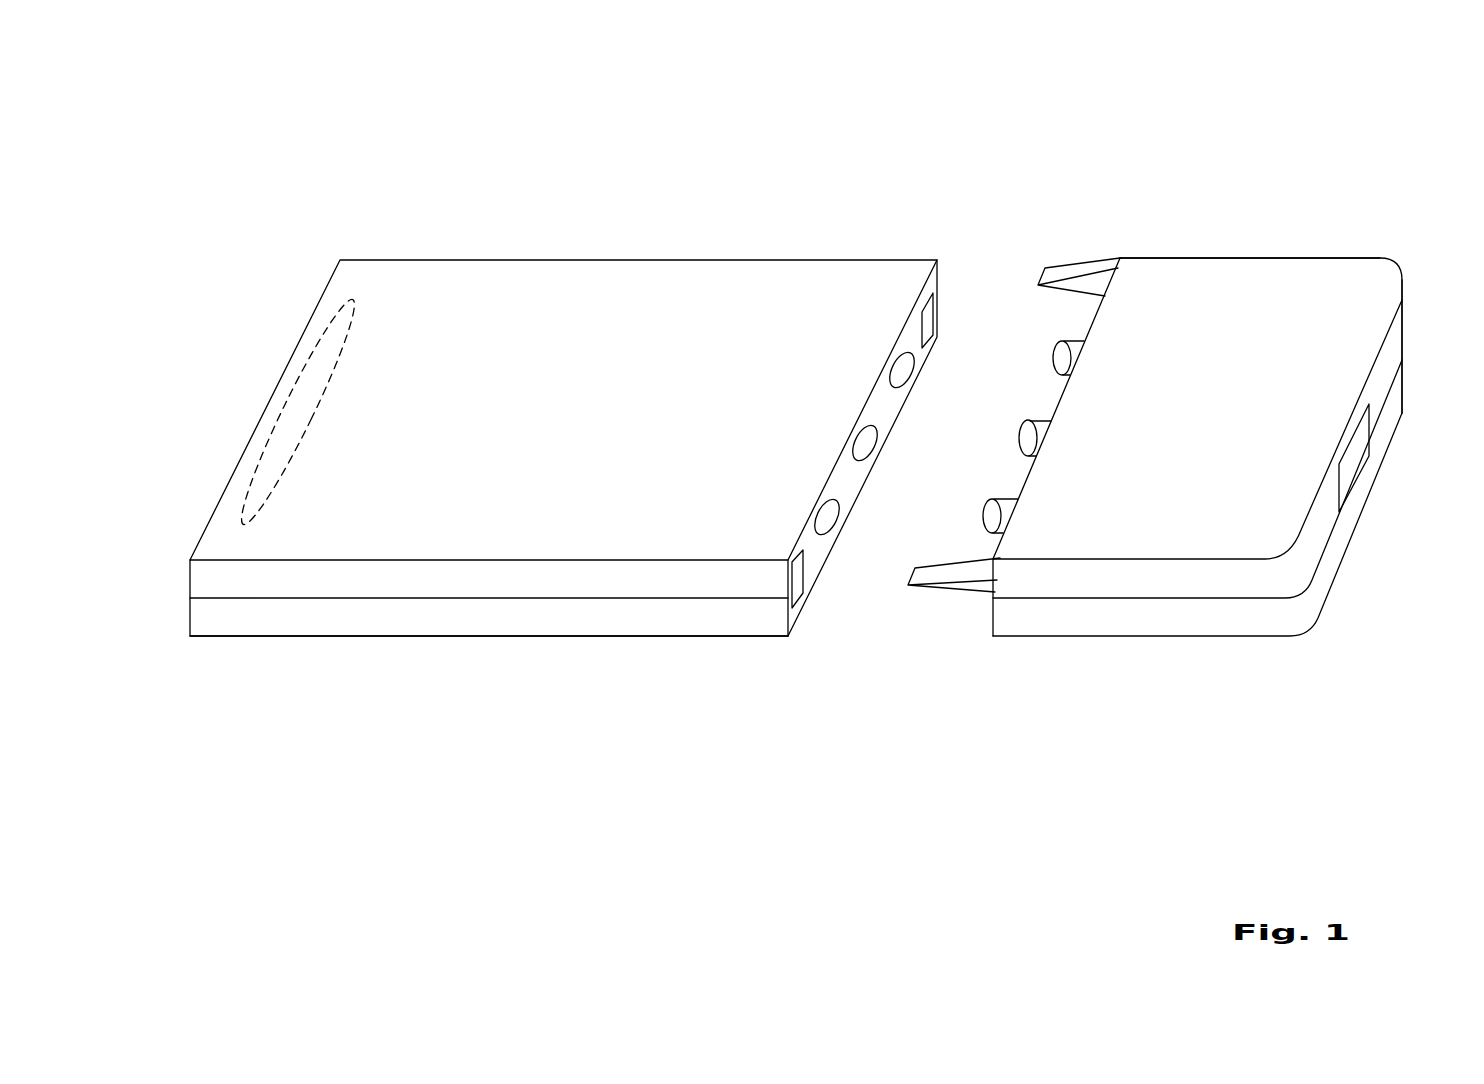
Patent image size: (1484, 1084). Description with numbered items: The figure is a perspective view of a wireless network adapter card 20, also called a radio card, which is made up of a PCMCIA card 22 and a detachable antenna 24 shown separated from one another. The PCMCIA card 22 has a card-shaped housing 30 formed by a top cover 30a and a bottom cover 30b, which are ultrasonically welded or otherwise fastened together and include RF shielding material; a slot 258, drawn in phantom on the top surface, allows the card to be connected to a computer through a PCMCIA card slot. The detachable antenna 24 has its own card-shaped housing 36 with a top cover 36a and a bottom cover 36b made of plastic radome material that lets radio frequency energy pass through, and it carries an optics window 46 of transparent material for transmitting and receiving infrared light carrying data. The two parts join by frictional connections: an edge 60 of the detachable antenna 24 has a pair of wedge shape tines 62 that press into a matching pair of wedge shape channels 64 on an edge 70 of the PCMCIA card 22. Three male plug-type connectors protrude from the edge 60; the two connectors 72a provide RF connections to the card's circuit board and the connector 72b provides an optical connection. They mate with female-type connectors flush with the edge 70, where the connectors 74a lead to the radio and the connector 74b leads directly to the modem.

The wireless network adapter card 20 is at (1114, 141).
The PCMCIA card 22 is at (606, 230).
The detachable antenna 24 is at (1243, 218).
The card-shaped housing 30 is at (172, 562).
The top cover 30a is at (540, 545).
The bottom cover 30b is at (420, 637).
The card-shaped housing 36 is at (1407, 262).
The top cover 36a is at (1352, 268).
The bottom cover 36b is at (1387, 434).
The optics window 46 is at (1354, 462).
The edge 60 is at (1080, 321).
The wedge shape tines 62 is at (1068, 260).
The wedge shape channels 64 is at (926, 315).
The edge 70 is at (816, 575).
The male plug-type connectors 72a is at (1053, 363).
The male plug-type connector 72b is at (1019, 443).
The female-type connectors 74a is at (902, 372).
The female-type connector 74b is at (865, 445).
The slot 258 is at (320, 415).